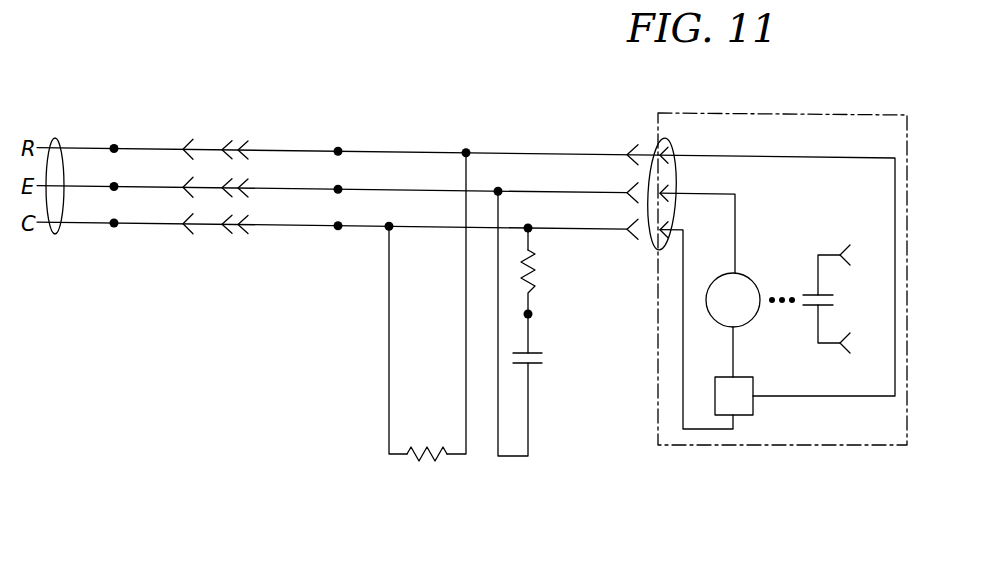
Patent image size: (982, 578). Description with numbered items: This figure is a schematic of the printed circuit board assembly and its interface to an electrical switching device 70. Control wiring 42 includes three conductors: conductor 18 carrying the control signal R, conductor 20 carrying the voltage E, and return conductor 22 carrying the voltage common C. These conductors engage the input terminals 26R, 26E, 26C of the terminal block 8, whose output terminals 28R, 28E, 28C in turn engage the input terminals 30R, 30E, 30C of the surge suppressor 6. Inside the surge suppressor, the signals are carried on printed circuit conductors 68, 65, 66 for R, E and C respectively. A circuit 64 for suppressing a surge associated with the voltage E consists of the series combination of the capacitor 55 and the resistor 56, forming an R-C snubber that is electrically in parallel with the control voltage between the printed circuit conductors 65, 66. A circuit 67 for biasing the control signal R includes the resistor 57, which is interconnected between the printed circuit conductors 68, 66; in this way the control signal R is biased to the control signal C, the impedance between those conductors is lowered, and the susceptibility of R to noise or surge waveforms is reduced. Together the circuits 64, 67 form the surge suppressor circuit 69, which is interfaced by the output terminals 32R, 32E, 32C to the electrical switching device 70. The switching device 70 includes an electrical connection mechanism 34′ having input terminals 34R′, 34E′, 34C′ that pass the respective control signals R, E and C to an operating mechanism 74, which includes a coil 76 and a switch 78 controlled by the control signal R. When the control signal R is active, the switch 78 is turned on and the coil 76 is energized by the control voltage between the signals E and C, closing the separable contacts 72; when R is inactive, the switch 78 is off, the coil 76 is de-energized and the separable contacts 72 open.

The surge suppressor 6 is at (488, 132).
The terminal block 8 is at (207, 128).
The conductor 18 is at (110, 146).
The conductor 20 is at (110, 184).
The return conductor 22 is at (110, 221).
The input terminal 26R is at (181, 147).
The input terminal 26E is at (181, 185).
The input terminal 26C is at (181, 222).
The output terminal 28R is at (225, 142).
The output terminal 28E is at (224, 196).
The output terminal 28C is at (224, 233).
The input terminal 30R is at (252, 148).
The input terminal 30E is at (252, 186).
The input terminal 30C is at (252, 223).
The output terminal 32R is at (625, 152).
The output terminal 32E is at (625, 190).
The output terminal 32C is at (625, 226).
The electrical connection mechanism 34′ is at (658, 247).
The input terminal 34R′ is at (670, 154).
The input terminal 34E′ is at (670, 192).
The input terminal 34C′ is at (670, 228).
The control wiring 42 is at (57, 234).
The capacitor 55 is at (544, 358).
The resistor 56 is at (533, 289).
The resistor 57 is at (425, 461).
The circuit 64 is at (551, 394).
The printed circuit conductor 65 is at (342, 188).
The printed circuit conductor 66 is at (342, 224).
The circuit 67 is at (324, 420).
The printed circuit conductor 68 is at (342, 150).
The surge suppressor circuit 69 is at (542, 485).
The electrical switching device 70 is at (815, 115).
The separable contacts 72 is at (834, 300).
The operating mechanism 74 is at (754, 334).
The coil 76 is at (745, 272).
The switch 78 is at (753, 412).